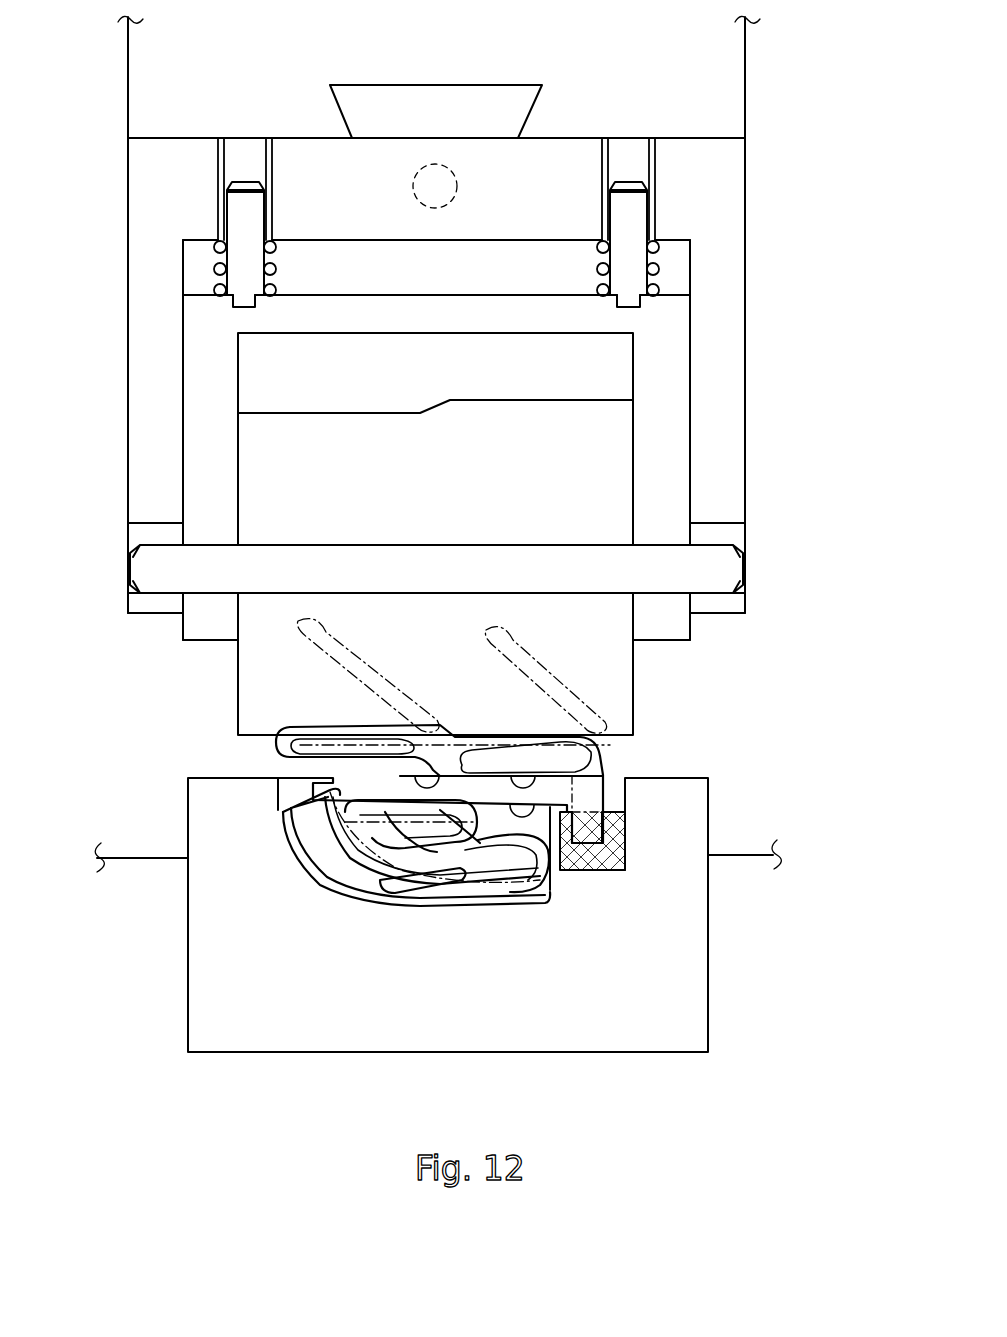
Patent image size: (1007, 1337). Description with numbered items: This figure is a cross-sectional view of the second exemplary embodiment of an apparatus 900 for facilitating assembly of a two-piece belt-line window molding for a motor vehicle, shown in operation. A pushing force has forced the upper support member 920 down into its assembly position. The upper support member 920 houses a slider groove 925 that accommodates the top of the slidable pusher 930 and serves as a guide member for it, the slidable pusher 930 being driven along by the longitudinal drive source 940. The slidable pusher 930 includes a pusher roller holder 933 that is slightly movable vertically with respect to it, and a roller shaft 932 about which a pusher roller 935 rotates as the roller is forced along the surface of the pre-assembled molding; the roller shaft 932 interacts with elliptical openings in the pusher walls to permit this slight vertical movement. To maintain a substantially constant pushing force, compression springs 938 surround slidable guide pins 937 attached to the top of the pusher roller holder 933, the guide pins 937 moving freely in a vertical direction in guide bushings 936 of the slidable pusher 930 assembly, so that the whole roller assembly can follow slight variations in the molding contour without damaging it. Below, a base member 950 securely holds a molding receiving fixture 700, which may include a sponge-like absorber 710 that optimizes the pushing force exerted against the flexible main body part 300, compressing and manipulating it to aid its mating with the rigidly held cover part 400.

The apparatus 900 is at (797, 262).
The upper support member 920 is at (723, 92).
The slider groove 925 is at (518, 102).
The slidable pusher 930 is at (708, 453).
The roller shaft 932 is at (733, 567).
The pusher roller holder 933 is at (655, 400).
The pusher roller 935 is at (617, 740).
The guide bushings 936 is at (602, 147).
The slidable guide pins 937 is at (252, 215).
The compression springs 938 is at (277, 268).
The longitudinal drive source 940 is at (457, 182).
The main body part 300 is at (590, 790).
The cover part 400 is at (495, 905).
The molding receiving fixture 700 is at (658, 1038).
The sponge-like absorber 710 is at (625, 852).
The base member 950 is at (163, 880).